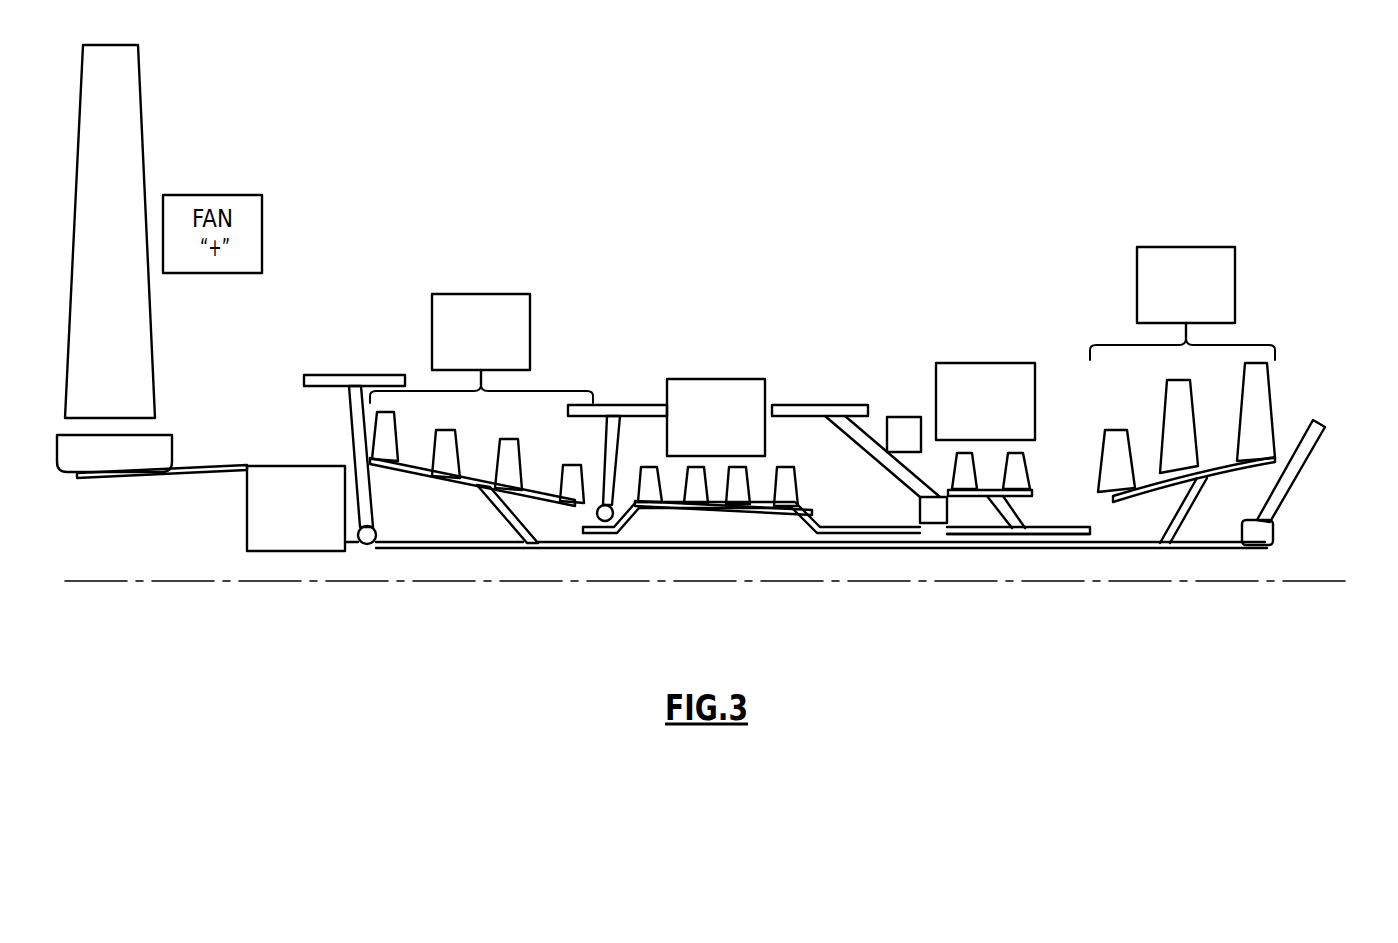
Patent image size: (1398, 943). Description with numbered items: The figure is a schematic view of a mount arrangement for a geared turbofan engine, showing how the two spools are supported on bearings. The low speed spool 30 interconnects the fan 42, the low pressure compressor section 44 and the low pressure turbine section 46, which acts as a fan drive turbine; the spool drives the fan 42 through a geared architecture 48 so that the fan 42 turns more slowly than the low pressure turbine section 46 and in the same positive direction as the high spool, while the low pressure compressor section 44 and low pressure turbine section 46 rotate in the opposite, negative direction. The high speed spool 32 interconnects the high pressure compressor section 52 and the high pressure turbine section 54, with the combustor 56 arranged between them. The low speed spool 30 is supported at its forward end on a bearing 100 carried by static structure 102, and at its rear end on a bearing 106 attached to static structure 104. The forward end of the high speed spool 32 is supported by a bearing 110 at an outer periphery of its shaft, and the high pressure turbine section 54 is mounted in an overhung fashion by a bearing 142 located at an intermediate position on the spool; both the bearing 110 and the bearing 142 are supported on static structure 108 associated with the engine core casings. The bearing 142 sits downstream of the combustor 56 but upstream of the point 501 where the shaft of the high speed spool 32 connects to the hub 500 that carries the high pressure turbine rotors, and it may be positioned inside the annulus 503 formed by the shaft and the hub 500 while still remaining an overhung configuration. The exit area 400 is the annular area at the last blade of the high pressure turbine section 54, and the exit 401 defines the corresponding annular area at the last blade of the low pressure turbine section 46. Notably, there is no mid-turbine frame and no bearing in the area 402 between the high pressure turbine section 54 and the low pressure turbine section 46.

The fan 42 is at (123, 173).
The low pressure compressor section 44 is at (530, 318).
The low pressure turbine section 46 is at (1240, 285).
The geared architecture 48 is at (258, 506).
The high pressure compressor section 52 is at (680, 392).
The high pressure turbine section 54 is at (936, 377).
The combustor 56 is at (905, 430).
The low speed spool 30 is at (703, 547).
The high speed spool 32 is at (877, 527).
The bearing 100 is at (371, 546).
The static structure 102 is at (335, 377).
The static structure 104 is at (1292, 485).
The bearing 106 is at (1276, 532).
The static structure 108 is at (625, 407).
The bearing 110 is at (597, 514).
The bearing 142 is at (925, 524).
The exit area 400 is at (1025, 462).
The exit 401 is at (1272, 400).
The area 402 is at (1093, 467).
The hub 500 is at (1020, 512).
The point 501 is at (1022, 526).
The annulus 503 is at (982, 511).